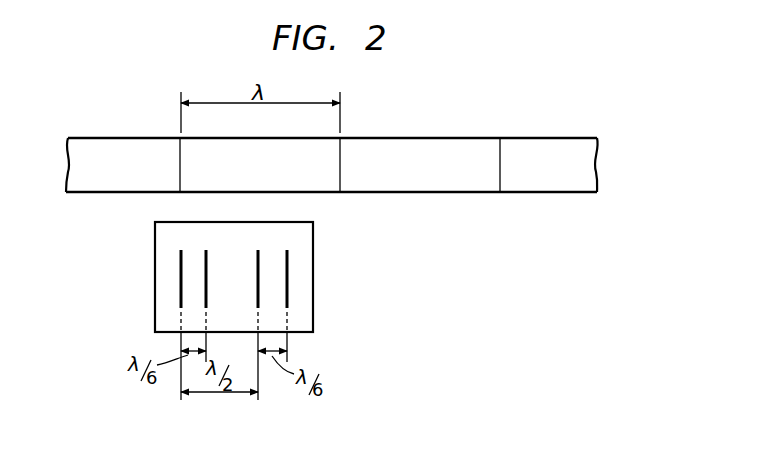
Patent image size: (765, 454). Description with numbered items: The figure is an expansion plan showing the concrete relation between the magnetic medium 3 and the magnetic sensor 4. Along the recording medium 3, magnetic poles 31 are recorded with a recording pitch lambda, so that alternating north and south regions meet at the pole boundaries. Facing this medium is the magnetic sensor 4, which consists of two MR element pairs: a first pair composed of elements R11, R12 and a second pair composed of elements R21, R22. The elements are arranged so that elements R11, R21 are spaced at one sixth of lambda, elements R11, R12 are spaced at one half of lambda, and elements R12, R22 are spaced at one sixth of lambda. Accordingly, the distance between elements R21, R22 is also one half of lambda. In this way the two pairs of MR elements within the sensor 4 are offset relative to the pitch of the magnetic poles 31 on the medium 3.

The magnetic medium 3 is at (465, 195).
The magnetic poles 31 is at (348, 158).
The magnetic sensor 4 is at (155, 305).
The MR element R11 is at (181, 279).
The MR element R12 is at (259, 260).
The MR element R21 is at (206, 253).
The MR element R22 is at (288, 287).